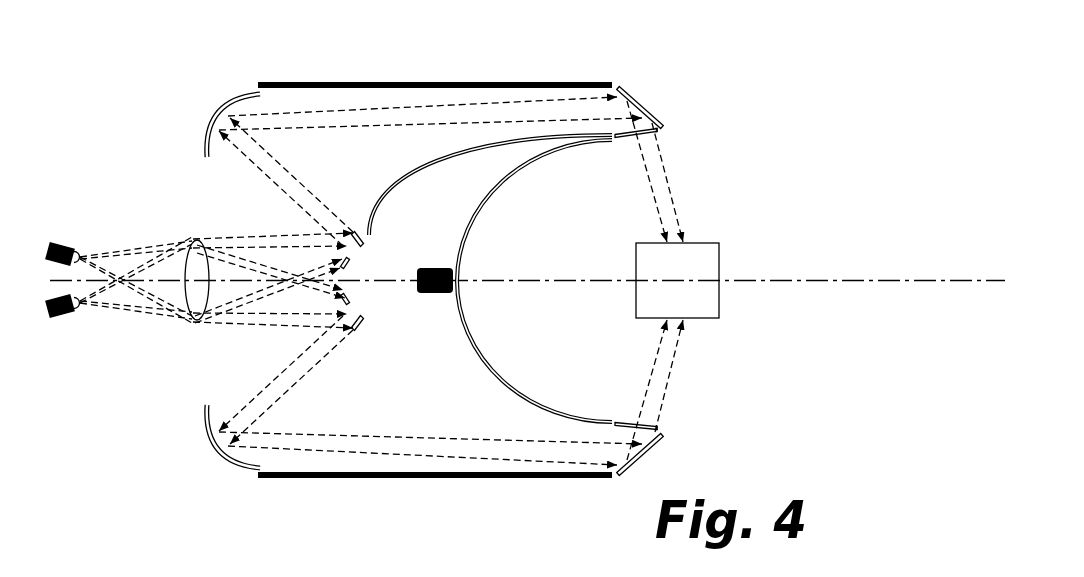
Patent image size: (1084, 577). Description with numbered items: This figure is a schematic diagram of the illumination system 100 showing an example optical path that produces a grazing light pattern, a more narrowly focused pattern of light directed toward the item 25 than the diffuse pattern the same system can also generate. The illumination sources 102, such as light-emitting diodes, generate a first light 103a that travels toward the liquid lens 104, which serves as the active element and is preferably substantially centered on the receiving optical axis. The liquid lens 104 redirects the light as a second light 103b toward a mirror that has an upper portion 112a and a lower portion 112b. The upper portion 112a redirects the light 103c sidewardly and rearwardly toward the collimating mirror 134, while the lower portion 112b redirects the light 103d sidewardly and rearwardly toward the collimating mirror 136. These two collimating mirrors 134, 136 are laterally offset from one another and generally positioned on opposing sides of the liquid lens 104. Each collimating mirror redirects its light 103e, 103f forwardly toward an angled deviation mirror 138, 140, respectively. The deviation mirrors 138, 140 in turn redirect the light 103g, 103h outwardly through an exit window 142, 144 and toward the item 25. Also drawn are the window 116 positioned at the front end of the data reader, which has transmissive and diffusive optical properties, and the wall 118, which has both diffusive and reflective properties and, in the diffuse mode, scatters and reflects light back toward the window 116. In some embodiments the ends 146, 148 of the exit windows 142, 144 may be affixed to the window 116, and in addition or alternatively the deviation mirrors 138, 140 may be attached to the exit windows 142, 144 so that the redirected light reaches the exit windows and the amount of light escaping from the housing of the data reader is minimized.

The illumination system 100 is at (111, 128).
The illumination sources 102 is at (60, 243).
The first light 103a is at (162, 247).
The second light 103b is at (267, 237).
The light redirected by upper mirror portion 103c is at (248, 166).
The light redirected by lower mirror portion 103d is at (303, 367).
The light redirected by upper collimating mirror 103e is at (320, 130).
The light redirected by lower collimating mirror 103f is at (417, 437).
The light redirected by upper deviation mirror 103g is at (670, 192).
The light redirected by lower deviation mirror 103h is at (670, 377).
The liquid lens 104 is at (197, 322).
The upper portion of the mirror 112a is at (357, 238).
The lower portion of the mirror 112b is at (357, 324).
The window 116 is at (481, 208).
The wall 118 is at (452, 158).
The collimating mirror 134 is at (228, 108).
The collimating mirror 136 is at (227, 450).
The angled deviation mirror 138 is at (642, 103).
The angled deviation mirror 140 is at (657, 440).
The exit window 142 is at (657, 133).
The exit window 144 is at (657, 423).
The end of the exit window 146 is at (623, 140).
The end of the exit window 148 is at (623, 420).
The item 25 is at (712, 242).